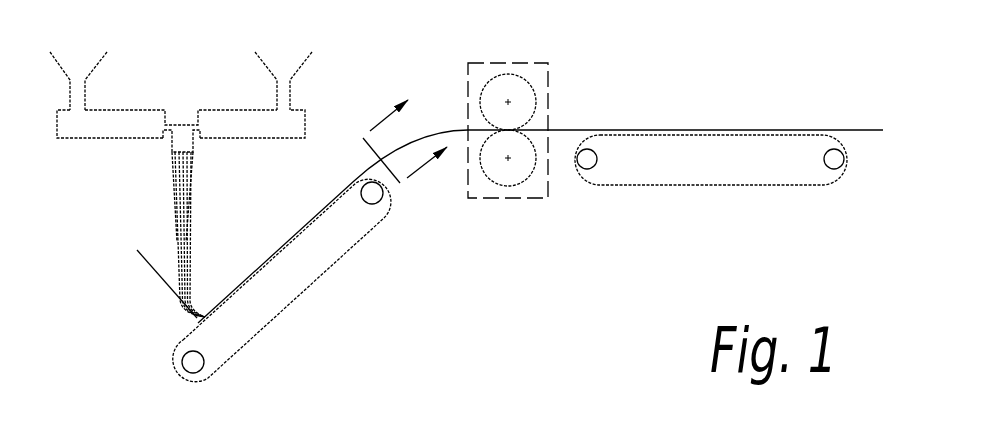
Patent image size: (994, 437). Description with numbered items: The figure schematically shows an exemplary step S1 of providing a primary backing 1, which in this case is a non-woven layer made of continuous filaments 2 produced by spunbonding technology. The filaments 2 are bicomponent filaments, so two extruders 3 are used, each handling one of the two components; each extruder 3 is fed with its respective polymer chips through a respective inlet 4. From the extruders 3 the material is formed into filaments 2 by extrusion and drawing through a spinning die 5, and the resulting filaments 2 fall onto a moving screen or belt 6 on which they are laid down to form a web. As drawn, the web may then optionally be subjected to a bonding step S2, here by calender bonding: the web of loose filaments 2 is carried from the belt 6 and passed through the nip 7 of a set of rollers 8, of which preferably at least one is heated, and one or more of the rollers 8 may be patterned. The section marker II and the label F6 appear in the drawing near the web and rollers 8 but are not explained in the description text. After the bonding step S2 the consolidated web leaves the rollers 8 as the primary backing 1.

The primary backing 1 is at (837, 130).
The continuous filaments 2 is at (188, 245).
The extruders 3 is at (115, 130).
The inlets 4 is at (86, 65).
The spinning die 5 is at (181, 146).
The moving screen or belt 6 is at (283, 250).
The nip 7 is at (470, 125).
The rollers 8 is at (507, 82).
The step of providing a primary backing S1 is at (218, 93).
The bonding step S2 is at (548, 98).
The pressing force F6 is at (533, 198).
The section line II is at (363, 138).